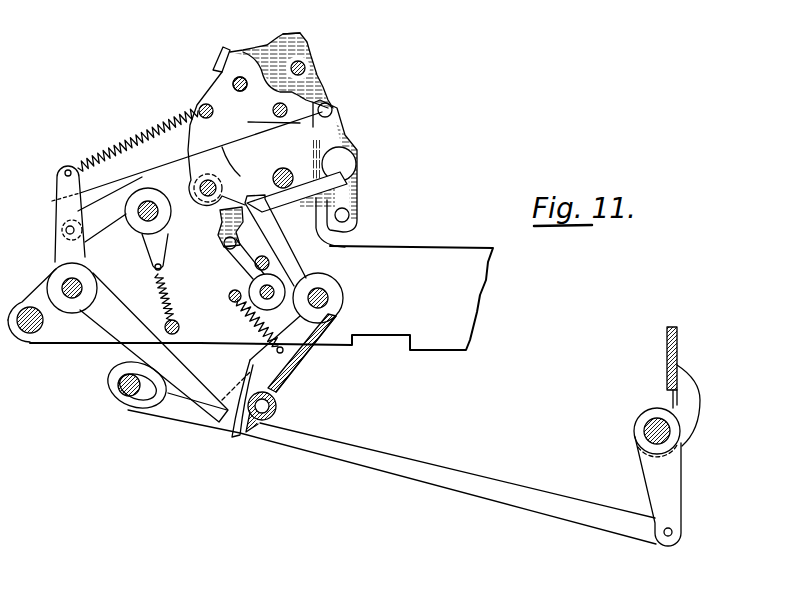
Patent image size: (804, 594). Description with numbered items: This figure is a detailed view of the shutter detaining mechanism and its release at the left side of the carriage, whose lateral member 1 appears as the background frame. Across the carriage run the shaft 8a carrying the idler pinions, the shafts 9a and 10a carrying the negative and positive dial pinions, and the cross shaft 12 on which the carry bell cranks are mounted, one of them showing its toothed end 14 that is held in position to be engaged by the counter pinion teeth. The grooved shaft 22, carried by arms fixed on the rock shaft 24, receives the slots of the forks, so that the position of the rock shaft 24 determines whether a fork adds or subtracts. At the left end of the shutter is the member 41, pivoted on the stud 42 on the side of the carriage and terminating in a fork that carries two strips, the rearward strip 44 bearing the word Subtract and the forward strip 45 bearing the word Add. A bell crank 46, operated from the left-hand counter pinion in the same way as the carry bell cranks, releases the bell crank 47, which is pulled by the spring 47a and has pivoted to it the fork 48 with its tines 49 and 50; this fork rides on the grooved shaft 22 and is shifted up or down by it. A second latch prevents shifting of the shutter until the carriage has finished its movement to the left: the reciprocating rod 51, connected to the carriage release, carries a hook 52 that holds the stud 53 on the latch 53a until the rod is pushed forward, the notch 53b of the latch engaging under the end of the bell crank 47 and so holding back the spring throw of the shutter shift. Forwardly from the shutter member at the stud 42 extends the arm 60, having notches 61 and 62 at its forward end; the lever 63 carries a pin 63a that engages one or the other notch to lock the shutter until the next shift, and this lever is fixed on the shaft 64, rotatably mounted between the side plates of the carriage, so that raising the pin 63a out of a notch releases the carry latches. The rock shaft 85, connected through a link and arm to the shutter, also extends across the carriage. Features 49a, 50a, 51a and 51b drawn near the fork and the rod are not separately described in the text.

The lateral member 1 is at (470, 283).
The shaft 8a is at (260, 123).
The shaft 9a is at (305, 64).
The shaft 10a is at (233, 82).
The cross shaft 12 is at (330, 299).
The toothed end 14 is at (278, 171).
The grooved shaft 22 is at (205, 174).
The rock shaft 24 is at (138, 200).
The shutter member 41 is at (205, 148).
The stud 42 is at (356, 164).
The rearward strip 44 is at (295, 31).
The forward strip 45 is at (218, 52).
The bell crank 46 is at (258, 369).
The bell crank 47 is at (112, 320).
The spring 47a is at (116, 138).
The fork 48 is at (192, 177).
The tine 49 is at (264, 105).
The pin 49a is at (332, 110).
The tine 50 is at (345, 181).
The lug 50a is at (349, 214).
The reciprocating rod 51 is at (397, 468).
The slot 51a is at (123, 387).
The pin 51b is at (150, 390).
The hook 52 is at (231, 410).
The stud 53 is at (277, 412).
The latch 53a is at (274, 388).
The notch 53b is at (243, 395).
The arm 60 is at (323, 252).
The notch 61 is at (227, 218).
The notch 62 is at (238, 268).
The lever 63 is at (241, 262).
The pin 63a is at (226, 246).
The shaft 64 is at (334, 284).
The rock shaft 85 is at (270, 263).